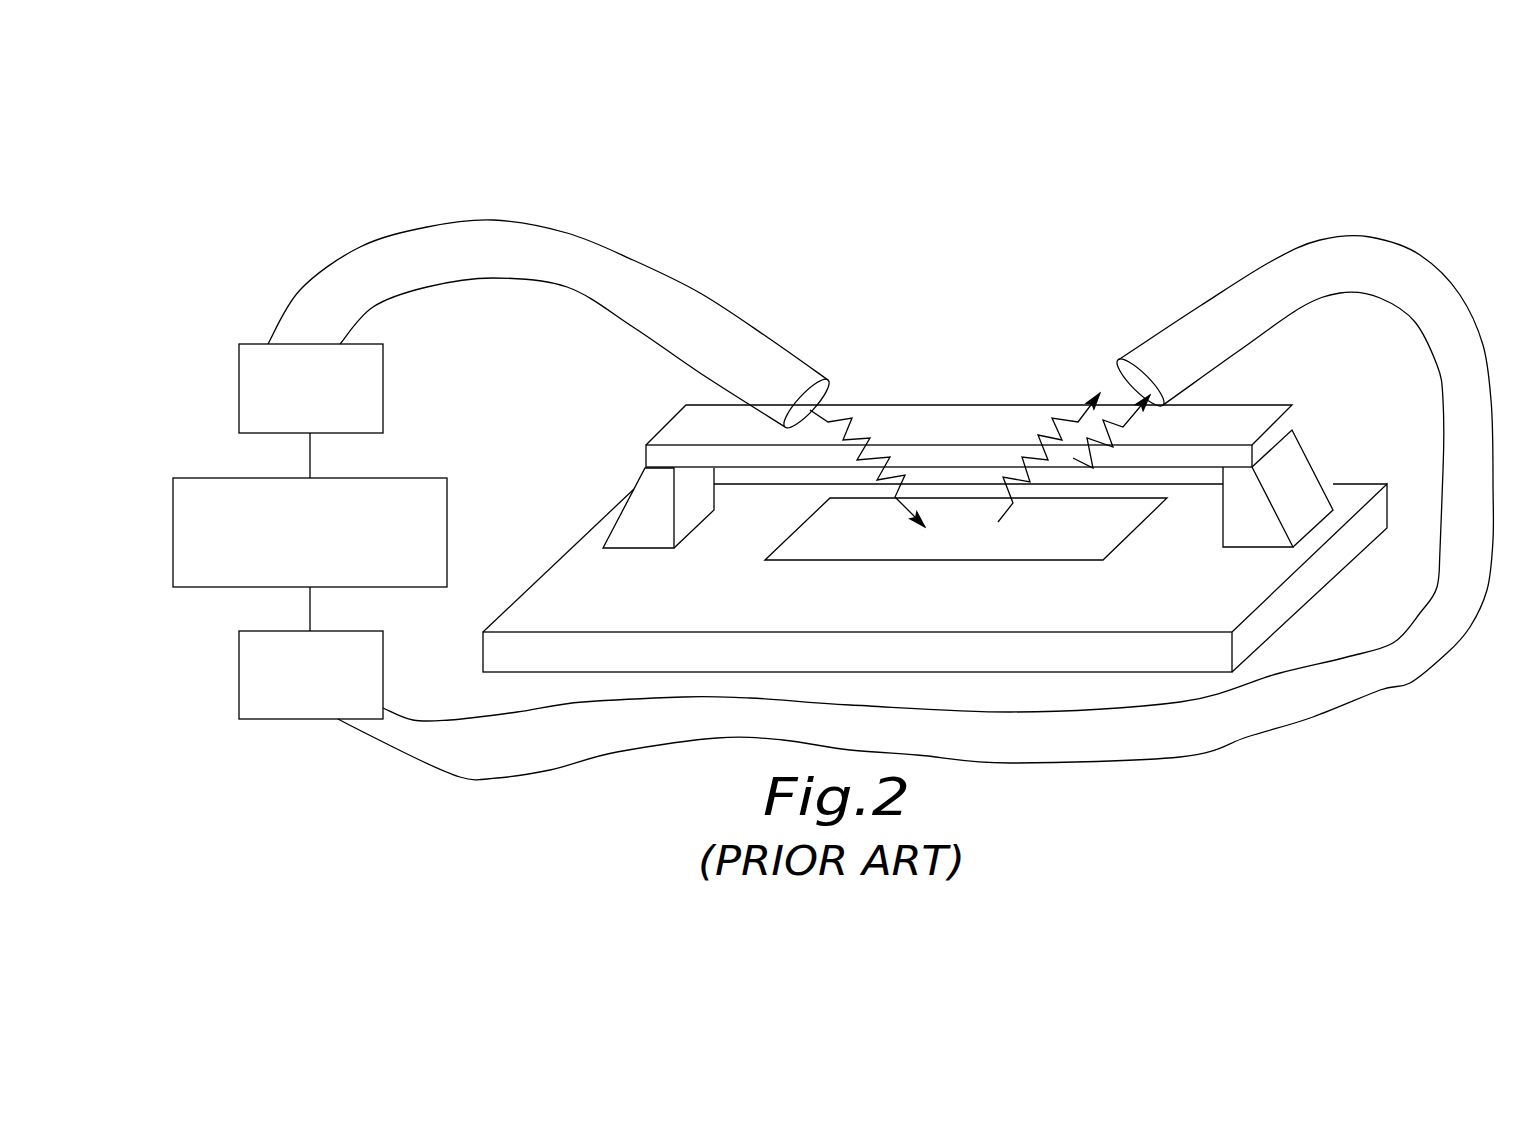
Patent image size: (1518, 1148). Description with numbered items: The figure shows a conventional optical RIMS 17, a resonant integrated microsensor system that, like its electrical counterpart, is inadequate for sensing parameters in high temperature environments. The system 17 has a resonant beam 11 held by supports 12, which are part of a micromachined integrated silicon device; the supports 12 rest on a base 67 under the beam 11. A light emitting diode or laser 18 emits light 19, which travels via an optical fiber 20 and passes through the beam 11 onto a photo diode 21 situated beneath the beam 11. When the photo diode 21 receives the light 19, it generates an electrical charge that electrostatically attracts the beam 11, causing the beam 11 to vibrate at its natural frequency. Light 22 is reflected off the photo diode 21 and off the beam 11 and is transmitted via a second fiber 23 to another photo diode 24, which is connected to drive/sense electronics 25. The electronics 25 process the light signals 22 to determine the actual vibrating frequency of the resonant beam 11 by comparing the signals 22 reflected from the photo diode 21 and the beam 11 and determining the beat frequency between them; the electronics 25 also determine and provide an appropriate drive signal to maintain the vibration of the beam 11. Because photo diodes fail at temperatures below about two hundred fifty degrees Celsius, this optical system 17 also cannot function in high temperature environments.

The resonant beam 11 is at (1253, 413).
The supports 12 is at (698, 508).
The optical RIMS 17 is at (1215, 207).
The light emitting diode or laser 18 is at (383, 377).
The light 19 is at (855, 420).
The optical fiber 20 is at (663, 260).
The photo diode 21 is at (1133, 522).
The reflected light 22 is at (1035, 430).
The fiber 23 is at (1380, 240).
The photo diode 24 is at (257, 722).
The drive/sense electronics 25 is at (208, 575).
The base substrate 67 is at (1270, 615).